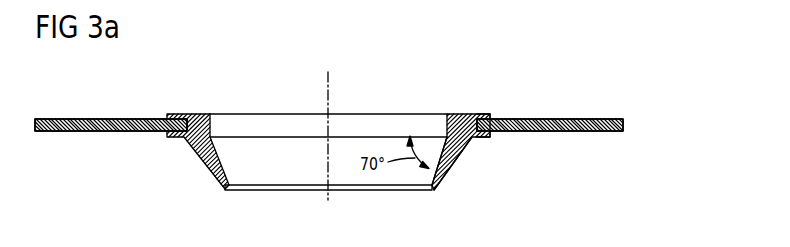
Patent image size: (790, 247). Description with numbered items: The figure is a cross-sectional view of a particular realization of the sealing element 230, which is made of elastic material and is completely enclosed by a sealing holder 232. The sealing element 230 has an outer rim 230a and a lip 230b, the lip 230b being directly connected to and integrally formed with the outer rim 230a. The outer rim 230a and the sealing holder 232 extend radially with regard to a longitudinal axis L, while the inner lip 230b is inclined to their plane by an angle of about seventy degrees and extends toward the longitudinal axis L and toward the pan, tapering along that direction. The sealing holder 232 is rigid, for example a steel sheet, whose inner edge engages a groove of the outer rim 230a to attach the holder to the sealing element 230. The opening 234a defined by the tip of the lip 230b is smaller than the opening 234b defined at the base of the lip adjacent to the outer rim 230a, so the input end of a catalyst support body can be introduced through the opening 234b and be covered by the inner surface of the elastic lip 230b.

The sealing element 230 is at (484, 104).
The outer rim 230a is at (483, 139).
The lip 230b is at (440, 174).
The sealing holder 232 is at (577, 118).
The opening 234a is at (290, 177).
The opening 234b is at (250, 125).
The longitudinal axis L is at (329, 88).